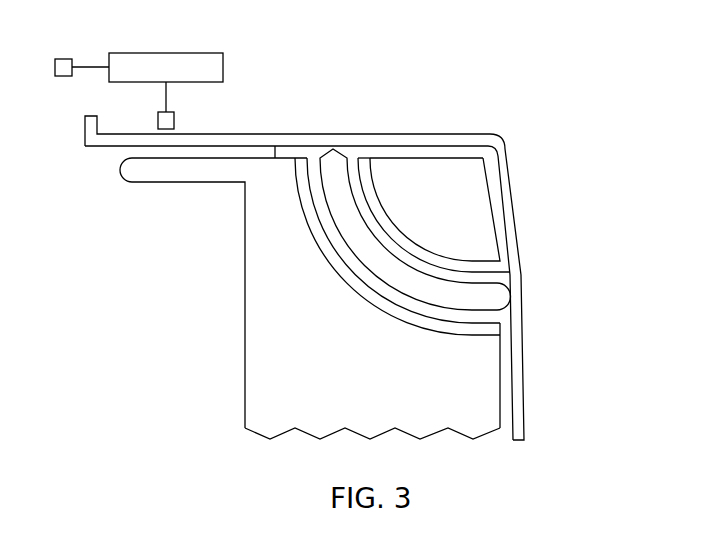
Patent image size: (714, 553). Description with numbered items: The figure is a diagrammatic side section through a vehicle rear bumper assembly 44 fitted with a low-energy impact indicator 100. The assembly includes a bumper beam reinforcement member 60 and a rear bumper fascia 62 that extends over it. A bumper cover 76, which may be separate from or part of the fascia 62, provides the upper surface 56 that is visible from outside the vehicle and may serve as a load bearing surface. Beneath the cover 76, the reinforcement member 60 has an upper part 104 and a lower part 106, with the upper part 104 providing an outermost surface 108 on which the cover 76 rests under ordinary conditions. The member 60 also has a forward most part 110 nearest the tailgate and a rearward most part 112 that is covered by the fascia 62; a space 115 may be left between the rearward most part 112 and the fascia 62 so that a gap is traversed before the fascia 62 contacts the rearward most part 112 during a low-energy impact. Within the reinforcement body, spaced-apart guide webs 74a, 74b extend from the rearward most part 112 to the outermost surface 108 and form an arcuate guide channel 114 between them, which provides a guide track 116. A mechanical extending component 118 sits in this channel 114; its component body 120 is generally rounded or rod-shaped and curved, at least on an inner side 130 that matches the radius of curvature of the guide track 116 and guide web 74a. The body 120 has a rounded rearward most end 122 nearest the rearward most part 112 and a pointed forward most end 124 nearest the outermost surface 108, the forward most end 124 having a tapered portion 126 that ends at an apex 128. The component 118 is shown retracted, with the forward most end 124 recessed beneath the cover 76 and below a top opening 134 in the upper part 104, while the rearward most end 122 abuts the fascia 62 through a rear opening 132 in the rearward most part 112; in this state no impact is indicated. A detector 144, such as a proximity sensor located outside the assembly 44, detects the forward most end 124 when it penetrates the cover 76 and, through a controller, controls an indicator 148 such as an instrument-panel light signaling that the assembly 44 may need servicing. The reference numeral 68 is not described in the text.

The vehicle rear bumper assembly 44 is at (555, 112).
The upper surface 56 is at (420, 133).
The bumper beam reinforcement member 60 is at (285, 378).
The rear bumper fascia 62 is at (562, 330).
The outer surface region 68 is at (520, 360).
The guide web 74a is at (372, 312).
The guide web 74b is at (396, 227).
The bumper cover 76 is at (247, 118).
The low-energy impact indicator 100 is at (478, 191).
The upper part 104 is at (277, 148).
The lower part 106 is at (490, 462).
The outermost surface 108 is at (453, 146).
The forward most part 110 is at (245, 325).
The rearward most part 112 is at (505, 380).
The guide channel 114 is at (456, 340).
The space 115 is at (512, 221).
The guide track 116 is at (336, 240).
The mechanical extending component 118 is at (405, 295).
The component body 120 is at (320, 198).
The rearward most end 122 is at (512, 302).
The forward most end 124 is at (320, 170).
The tapered portion 126 is at (360, 152).
The apex 128 is at (333, 146).
The inner side 130 is at (362, 275).
The rear opening 132 is at (512, 268).
The top opening 134 is at (365, 167).
The detector 144 is at (157, 118).
The indicator 148 is at (64, 58).